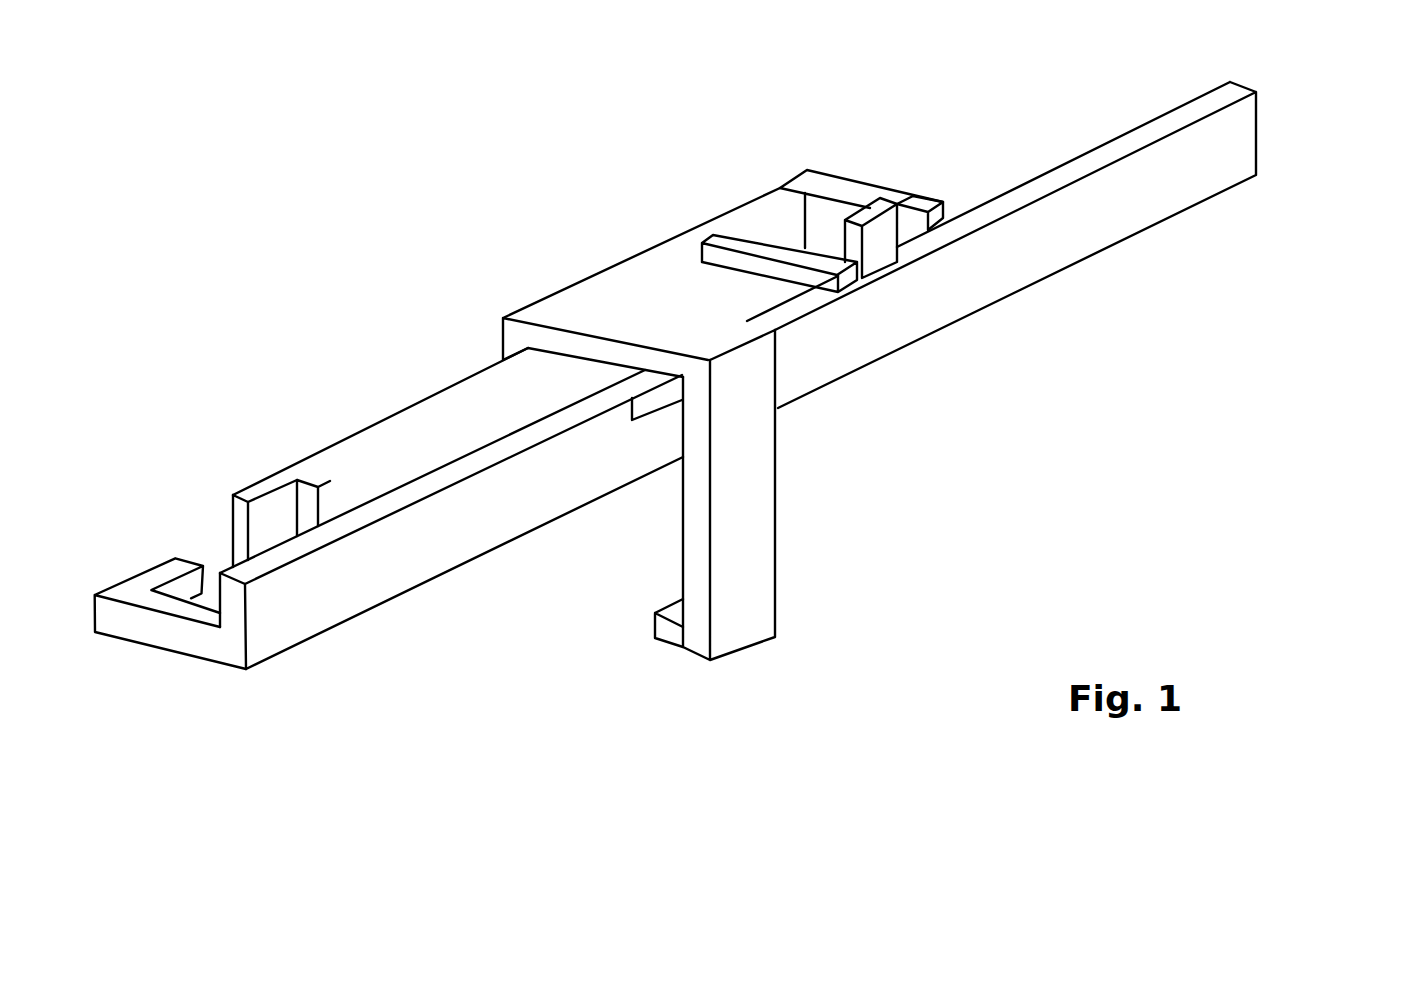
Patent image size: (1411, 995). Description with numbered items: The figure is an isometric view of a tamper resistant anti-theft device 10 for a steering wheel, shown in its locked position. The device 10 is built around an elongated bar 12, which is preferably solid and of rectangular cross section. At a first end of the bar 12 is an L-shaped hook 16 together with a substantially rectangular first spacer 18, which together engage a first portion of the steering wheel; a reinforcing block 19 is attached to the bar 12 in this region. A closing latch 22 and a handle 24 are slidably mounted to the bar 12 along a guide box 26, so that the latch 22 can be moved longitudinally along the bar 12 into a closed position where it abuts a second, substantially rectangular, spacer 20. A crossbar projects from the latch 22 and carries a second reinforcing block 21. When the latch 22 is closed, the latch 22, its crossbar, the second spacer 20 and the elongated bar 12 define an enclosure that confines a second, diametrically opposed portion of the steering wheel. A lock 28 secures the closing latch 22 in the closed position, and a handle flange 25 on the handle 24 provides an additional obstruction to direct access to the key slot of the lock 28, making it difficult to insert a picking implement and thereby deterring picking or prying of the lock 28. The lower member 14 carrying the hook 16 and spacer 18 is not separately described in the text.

The tamper resistant anti-theft device 10 is at (719, 422).
The elongated bar 12 is at (1268, 93).
The lower beam 14 is at (248, 672).
The L-shaped hook 16 is at (140, 570).
The first spacer 18 is at (305, 468).
The reinforcing block 19 is at (232, 497).
The second spacer 20 is at (848, 178).
The reinforcing block 21 is at (905, 202).
The closing latch 22 is at (657, 238).
The handle 24 is at (780, 536).
The handle flange 25 is at (668, 640).
The guide box 26 is at (427, 390).
The lock 28 is at (632, 425).